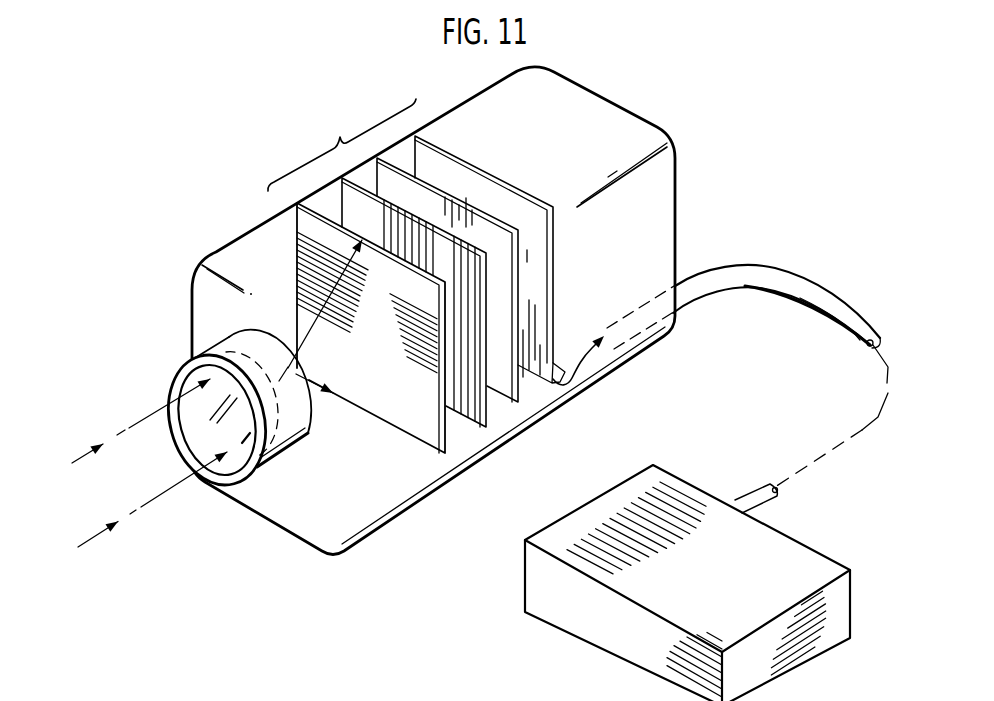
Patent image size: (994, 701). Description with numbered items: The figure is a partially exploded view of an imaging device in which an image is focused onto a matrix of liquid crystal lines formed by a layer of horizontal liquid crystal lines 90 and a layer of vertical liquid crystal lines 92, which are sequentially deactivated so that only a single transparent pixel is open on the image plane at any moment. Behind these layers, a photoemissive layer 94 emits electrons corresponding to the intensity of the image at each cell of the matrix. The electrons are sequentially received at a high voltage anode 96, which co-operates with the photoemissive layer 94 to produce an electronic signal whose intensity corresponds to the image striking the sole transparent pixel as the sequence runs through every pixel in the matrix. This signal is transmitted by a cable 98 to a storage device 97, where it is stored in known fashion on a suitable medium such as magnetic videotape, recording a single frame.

The horizontal liquid crystal lines 90 is at (424, 436).
The vertical liquid crystal lines 92 is at (469, 420).
The photoemissive layer 94 is at (500, 278).
The high voltage anode 96 is at (535, 242).
The storage device 97 is at (752, 602).
The cable 98 is at (827, 298).